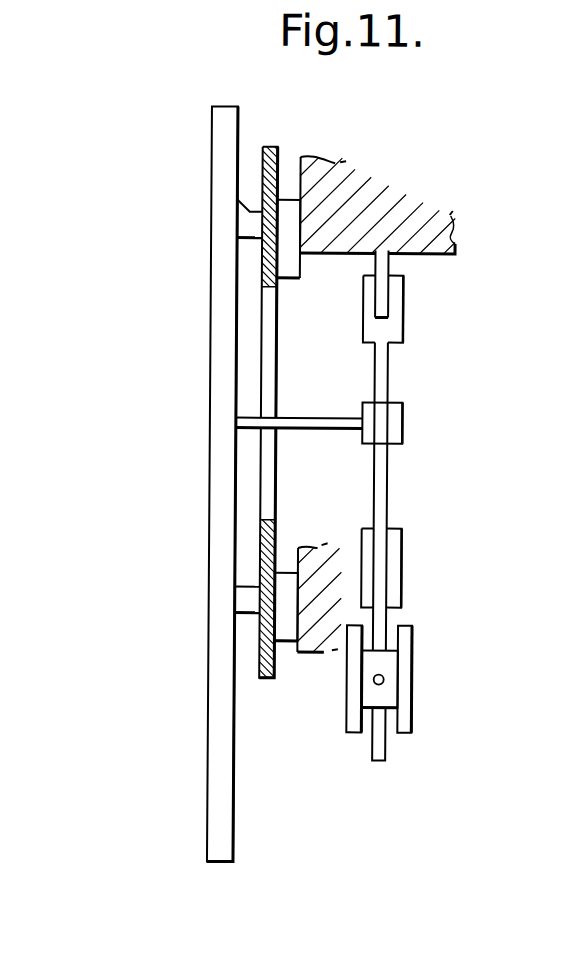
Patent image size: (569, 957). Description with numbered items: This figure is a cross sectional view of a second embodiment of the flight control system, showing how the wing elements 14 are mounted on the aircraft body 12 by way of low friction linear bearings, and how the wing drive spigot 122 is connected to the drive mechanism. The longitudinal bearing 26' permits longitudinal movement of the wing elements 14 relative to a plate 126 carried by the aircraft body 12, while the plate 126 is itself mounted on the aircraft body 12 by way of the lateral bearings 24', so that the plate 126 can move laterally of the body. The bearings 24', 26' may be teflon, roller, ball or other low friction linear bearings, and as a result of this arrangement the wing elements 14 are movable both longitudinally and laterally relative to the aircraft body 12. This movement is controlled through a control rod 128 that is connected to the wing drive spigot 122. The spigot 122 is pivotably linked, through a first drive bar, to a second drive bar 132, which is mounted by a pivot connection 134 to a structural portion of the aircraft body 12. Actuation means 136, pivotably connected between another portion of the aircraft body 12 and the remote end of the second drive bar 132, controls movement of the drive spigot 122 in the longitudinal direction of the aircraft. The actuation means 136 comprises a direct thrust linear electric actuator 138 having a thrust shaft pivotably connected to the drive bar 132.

The aircraft body 12 is at (422, 236).
The wing elements 14 is at (222, 284).
The lateral bearings 24' is at (219, 625).
The longitudinal bearing 26' is at (200, 588).
The wing drive spigot 122 is at (398, 440).
The plate 126 is at (267, 150).
The control rod 128 is at (318, 418).
The second drive bar 132 is at (383, 380).
The pivot connection 134 is at (385, 297).
The actuation means 136 is at (445, 717).
The direct thrust linear electric actuator 138 is at (390, 694).